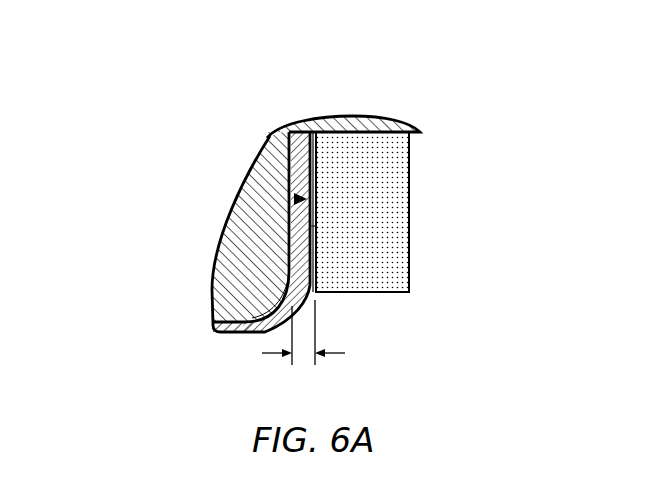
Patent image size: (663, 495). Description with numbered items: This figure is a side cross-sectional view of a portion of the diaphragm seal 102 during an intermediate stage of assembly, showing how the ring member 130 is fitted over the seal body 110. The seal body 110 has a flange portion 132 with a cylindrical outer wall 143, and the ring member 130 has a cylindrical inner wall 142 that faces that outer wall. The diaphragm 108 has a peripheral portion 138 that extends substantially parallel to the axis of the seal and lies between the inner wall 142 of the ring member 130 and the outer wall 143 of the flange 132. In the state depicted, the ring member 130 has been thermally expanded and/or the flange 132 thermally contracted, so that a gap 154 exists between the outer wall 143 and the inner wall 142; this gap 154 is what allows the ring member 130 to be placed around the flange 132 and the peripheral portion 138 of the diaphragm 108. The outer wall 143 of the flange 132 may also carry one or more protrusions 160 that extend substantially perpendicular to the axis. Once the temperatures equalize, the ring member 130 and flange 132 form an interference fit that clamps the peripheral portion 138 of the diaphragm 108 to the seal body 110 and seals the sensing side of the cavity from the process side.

The diaphragm seal 102 is at (120, 97).
The diaphragm 108 is at (225, 334).
The seal body 110 is at (278, 133).
The ring member 130 is at (397, 163).
The flange portion 132 is at (258, 294).
The peripheral portion 138 is at (300, 229).
The cylindrical inner wall 142 is at (296, 177).
The cylindrical outer wall 143 is at (303, 198).
The gap 154 is at (335, 352).
The protrusions 160 is at (299, 197).